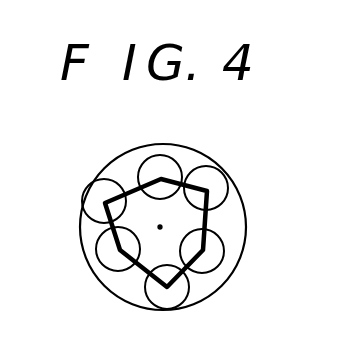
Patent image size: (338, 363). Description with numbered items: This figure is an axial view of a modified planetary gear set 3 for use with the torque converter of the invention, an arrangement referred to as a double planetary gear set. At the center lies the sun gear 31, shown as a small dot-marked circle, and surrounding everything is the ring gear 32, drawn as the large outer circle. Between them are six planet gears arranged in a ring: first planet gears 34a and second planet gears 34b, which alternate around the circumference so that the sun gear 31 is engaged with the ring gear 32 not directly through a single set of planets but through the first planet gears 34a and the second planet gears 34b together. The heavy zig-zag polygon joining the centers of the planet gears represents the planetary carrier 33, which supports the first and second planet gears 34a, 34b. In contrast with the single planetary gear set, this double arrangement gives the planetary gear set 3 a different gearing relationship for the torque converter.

The planetary gear set 3 is at (161, 232).
The sun gear 31 is at (104, 268).
The ring gear 32 is at (113, 162).
The planetary carrier 33 is at (208, 222).
The first planet gears 34a is at (156, 216).
The second planet gears 34b is at (243, 163).